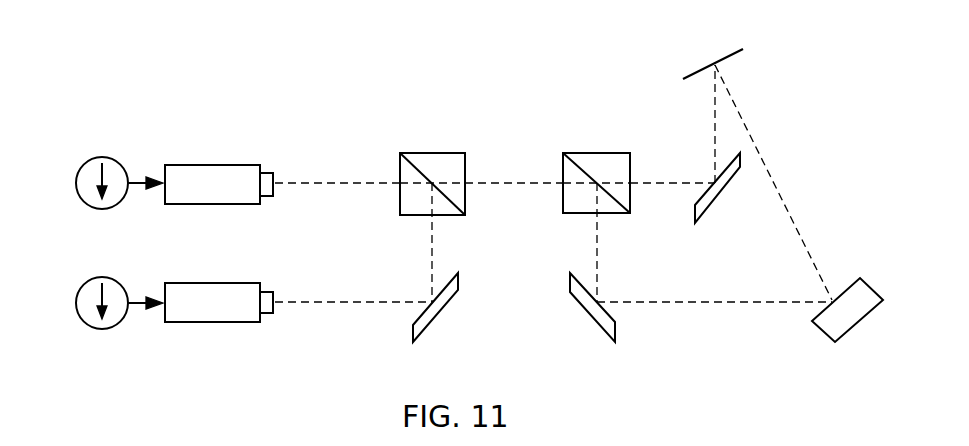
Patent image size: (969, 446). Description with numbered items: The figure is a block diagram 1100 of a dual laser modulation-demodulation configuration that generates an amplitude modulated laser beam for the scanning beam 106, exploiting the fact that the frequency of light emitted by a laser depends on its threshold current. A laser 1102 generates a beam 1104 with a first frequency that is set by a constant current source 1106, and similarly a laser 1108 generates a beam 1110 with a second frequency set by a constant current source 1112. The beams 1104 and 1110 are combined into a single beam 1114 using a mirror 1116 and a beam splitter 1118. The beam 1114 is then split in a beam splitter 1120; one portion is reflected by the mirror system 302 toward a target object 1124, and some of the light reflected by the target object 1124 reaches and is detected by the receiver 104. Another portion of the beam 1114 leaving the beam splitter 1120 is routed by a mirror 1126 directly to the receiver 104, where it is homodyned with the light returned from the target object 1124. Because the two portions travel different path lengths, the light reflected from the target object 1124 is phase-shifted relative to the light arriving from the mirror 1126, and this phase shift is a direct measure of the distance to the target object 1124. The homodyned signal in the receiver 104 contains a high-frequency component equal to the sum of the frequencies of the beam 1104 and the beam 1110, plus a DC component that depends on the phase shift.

The block diagram 1100 is at (178, 97).
The laser 1102 is at (203, 165).
The beam 1104 is at (347, 181).
The constant current source 1106 is at (118, 206).
The laser 1108 is at (203, 283).
The beam 1110 is at (348, 300).
The constant current source 1112 is at (118, 324).
The beam 1114 is at (545, 181).
The mirror 1116 is at (413, 333).
The beam splitter 1118 is at (437, 155).
The beam splitter 1120 is at (600, 155).
The target object 1124 is at (727, 57).
The mirror 1126 is at (615, 330).
The scanning beam 106 is at (713, 118).
The mirror system 302 is at (740, 165).
The receiver 104 is at (832, 325).